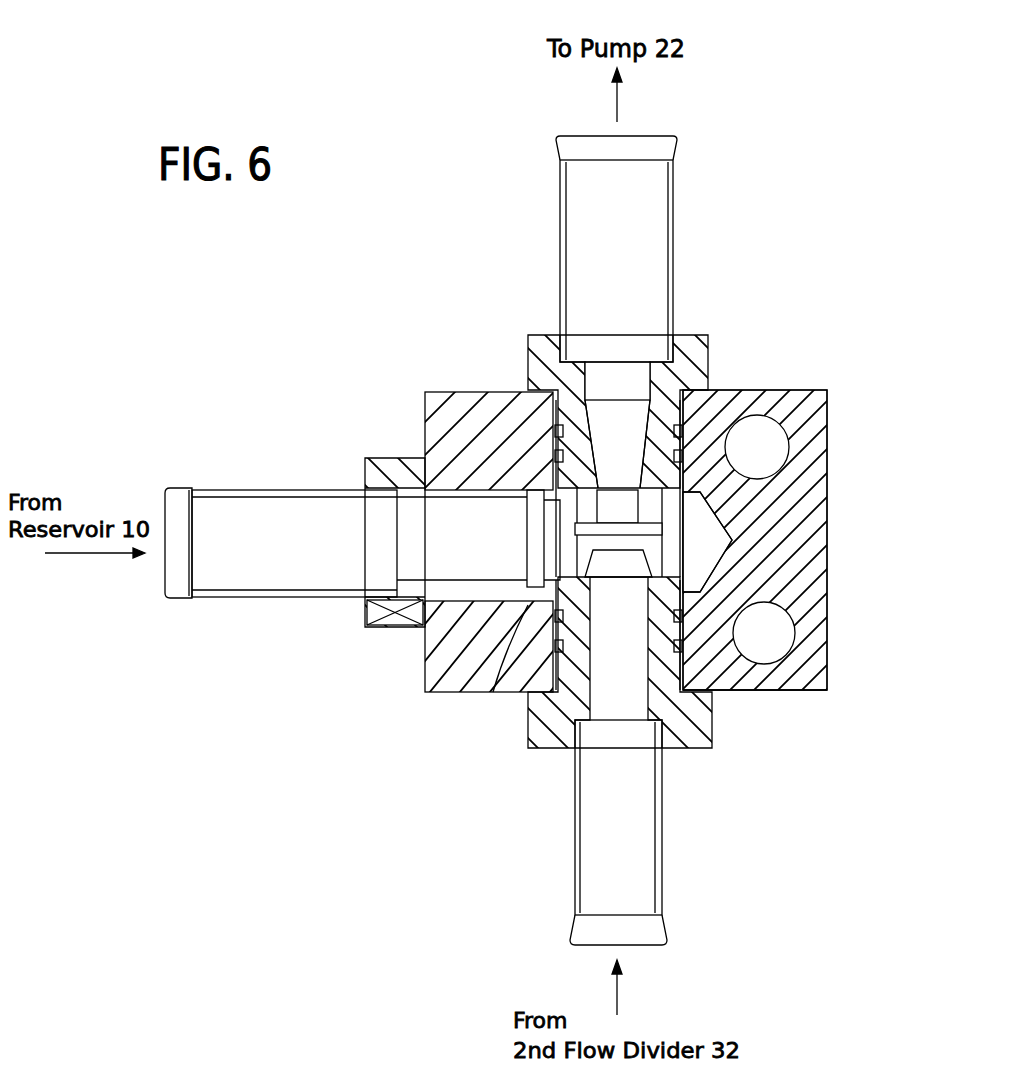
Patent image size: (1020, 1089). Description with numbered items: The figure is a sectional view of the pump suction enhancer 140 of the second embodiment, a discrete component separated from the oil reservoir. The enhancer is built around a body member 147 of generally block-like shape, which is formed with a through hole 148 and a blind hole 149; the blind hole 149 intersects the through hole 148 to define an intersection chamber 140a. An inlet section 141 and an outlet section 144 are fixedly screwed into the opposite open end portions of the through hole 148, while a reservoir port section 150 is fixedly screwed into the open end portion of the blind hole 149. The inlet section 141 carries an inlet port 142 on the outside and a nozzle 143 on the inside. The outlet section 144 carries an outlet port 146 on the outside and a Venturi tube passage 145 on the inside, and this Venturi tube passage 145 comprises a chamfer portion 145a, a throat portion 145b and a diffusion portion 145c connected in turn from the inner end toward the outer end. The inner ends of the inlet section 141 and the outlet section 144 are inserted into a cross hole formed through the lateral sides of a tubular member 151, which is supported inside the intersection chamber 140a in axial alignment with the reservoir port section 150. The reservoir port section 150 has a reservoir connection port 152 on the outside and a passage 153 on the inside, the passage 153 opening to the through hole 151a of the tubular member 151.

The pump suction enhancer 140 is at (777, 276).
The intersection chamber 140a is at (806, 605).
The inlet section 141 is at (715, 748).
The inlet port 142 is at (662, 895).
The nozzle 143 is at (705, 552).
The outlet section 144 is at (524, 334).
The Venturi tube passage 145 is at (603, 427).
The chamfer portion 145a is at (712, 530).
The throat portion 145b is at (690, 435).
The diffusion portion 145c is at (705, 355).
The outlet port 146 is at (677, 192).
The body member 147 is at (830, 665).
The through hole 148 is at (745, 692).
The blind hole 149 is at (427, 648).
The reservoir port section 150 is at (364, 456).
The tubular member 151 is at (525, 522).
The through hole of the tubular member 151a is at (493, 692).
The reservoir connection port 152 is at (215, 605).
The passage 153 is at (370, 615).